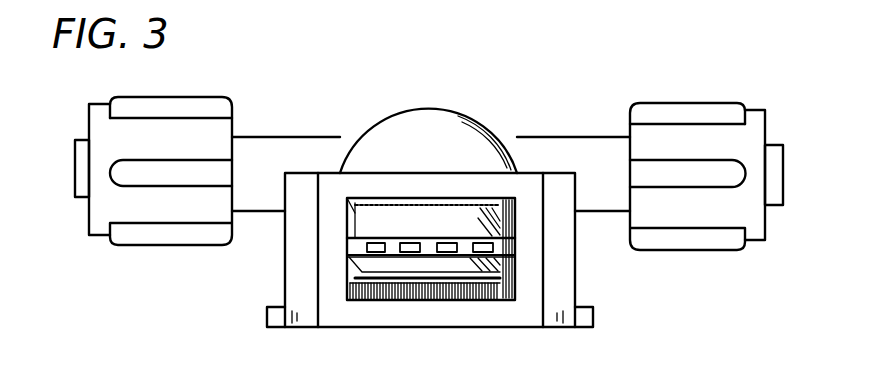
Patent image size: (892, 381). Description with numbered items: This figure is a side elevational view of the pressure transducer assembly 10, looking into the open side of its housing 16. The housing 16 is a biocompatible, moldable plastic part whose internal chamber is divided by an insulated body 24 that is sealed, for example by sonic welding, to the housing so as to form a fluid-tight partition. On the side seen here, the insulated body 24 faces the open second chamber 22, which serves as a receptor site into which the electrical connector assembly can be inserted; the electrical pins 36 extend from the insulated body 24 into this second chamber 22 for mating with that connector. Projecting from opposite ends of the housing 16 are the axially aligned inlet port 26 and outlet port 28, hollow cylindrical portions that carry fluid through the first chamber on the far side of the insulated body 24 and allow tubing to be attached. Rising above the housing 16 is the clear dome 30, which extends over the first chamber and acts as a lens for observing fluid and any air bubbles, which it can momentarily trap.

The pressure transducer assembly 10 is at (546, 134).
The housing 16 is at (290, 253).
The second chamber 22 is at (380, 283).
The insulated body 24 is at (497, 230).
The inlet port 26 is at (775, 143).
The outlet port 28 is at (83, 140).
The dome 30 is at (420, 110).
The electrical pins 36 is at (413, 255).